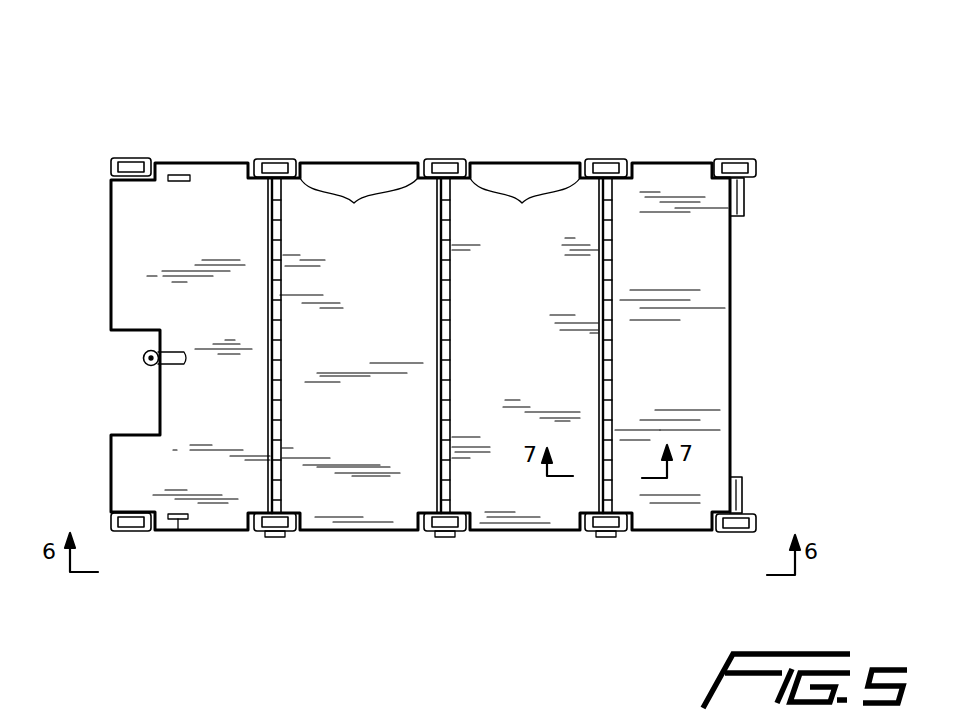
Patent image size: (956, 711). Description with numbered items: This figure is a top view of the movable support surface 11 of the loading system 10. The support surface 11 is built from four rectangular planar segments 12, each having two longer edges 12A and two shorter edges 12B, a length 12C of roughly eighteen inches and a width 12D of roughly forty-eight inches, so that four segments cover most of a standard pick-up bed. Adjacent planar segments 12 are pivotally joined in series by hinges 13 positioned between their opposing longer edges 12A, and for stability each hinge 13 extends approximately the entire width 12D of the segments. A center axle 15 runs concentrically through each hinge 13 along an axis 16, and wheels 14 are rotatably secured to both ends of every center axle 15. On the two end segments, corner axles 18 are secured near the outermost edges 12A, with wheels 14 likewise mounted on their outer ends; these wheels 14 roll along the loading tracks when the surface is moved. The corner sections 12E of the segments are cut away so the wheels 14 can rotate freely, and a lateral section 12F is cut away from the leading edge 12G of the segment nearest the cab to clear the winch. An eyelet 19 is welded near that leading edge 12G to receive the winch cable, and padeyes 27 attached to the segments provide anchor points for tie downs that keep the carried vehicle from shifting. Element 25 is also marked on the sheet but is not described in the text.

The loading system 10 is at (112, 80).
The support surface 11 is at (214, 192).
The planar segment 12 is at (206, 253).
The longer edge 12A is at (111, 255).
The shorter edge 12B is at (218, 162).
The length 12C is at (608, 35).
The width 12D is at (882, 164).
The corner section 12E is at (440, 204).
The lateral section 12F is at (160, 418).
The leading edge 12G is at (111, 467).
The hinge 13 is at (268, 380).
The wheel 14 is at (120, 158).
The center axle 15 is at (275, 537).
The axis 16 is at (275, 47).
The corner axle 18 is at (125, 180).
The eyelet 19 is at (143, 355).
The base 25 is at (478, 710).
The padeye 27 is at (180, 173).